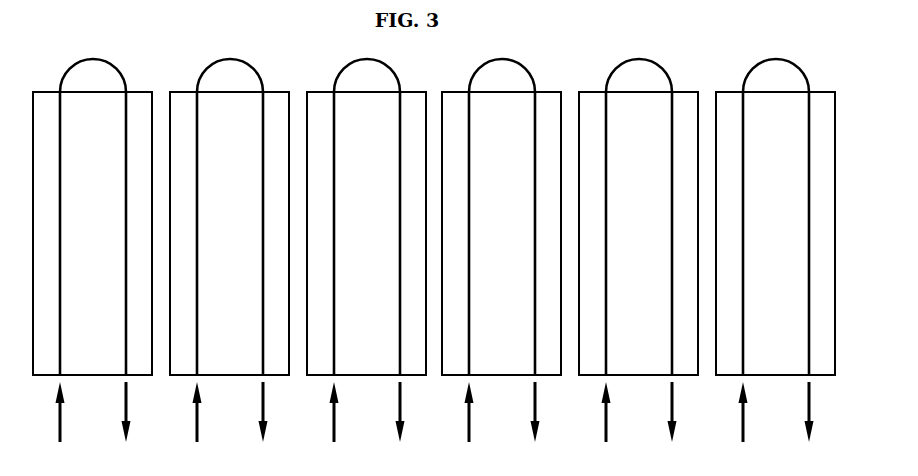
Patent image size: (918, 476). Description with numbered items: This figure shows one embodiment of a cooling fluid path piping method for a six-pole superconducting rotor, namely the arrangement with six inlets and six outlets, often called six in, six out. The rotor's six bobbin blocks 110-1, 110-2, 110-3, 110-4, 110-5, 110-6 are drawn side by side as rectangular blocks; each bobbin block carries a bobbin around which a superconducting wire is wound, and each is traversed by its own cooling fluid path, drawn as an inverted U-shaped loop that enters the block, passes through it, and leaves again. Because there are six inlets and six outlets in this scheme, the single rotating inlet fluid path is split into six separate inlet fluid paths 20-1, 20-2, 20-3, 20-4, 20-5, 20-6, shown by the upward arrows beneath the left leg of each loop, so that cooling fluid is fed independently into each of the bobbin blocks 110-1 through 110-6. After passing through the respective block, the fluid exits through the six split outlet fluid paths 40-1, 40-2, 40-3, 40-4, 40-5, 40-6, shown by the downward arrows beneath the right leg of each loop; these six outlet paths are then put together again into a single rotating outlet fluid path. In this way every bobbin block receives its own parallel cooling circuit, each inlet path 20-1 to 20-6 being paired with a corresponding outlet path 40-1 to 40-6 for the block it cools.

The bobbin block 110-1 is at (92, 217).
The split inlet fluid path 20-1 is at (60, 427).
The split outlet fluid path 40-1 is at (126, 427).
The bobbin block 110-2 is at (229, 217).
The split inlet fluid path 20-2 is at (197, 427).
The split outlet fluid path 40-2 is at (263, 427).
The bobbin block 110-3 is at (366, 217).
The split inlet fluid path 20-3 is at (334, 427).
The split outlet fluid path 40-3 is at (400, 427).
The bobbin block 110-4 is at (501, 217).
The split inlet fluid path 20-4 is at (469, 427).
The split outlet fluid path 40-4 is at (535, 427).
The bobbin block 110-5 is at (638, 217).
The split inlet fluid path 20-5 is at (606, 427).
The split outlet fluid path 40-5 is at (672, 427).
The bobbin block 110-6 is at (775, 217).
The split inlet fluid path 20-6 is at (743, 427).
The split outlet fluid path 40-6 is at (809, 427).